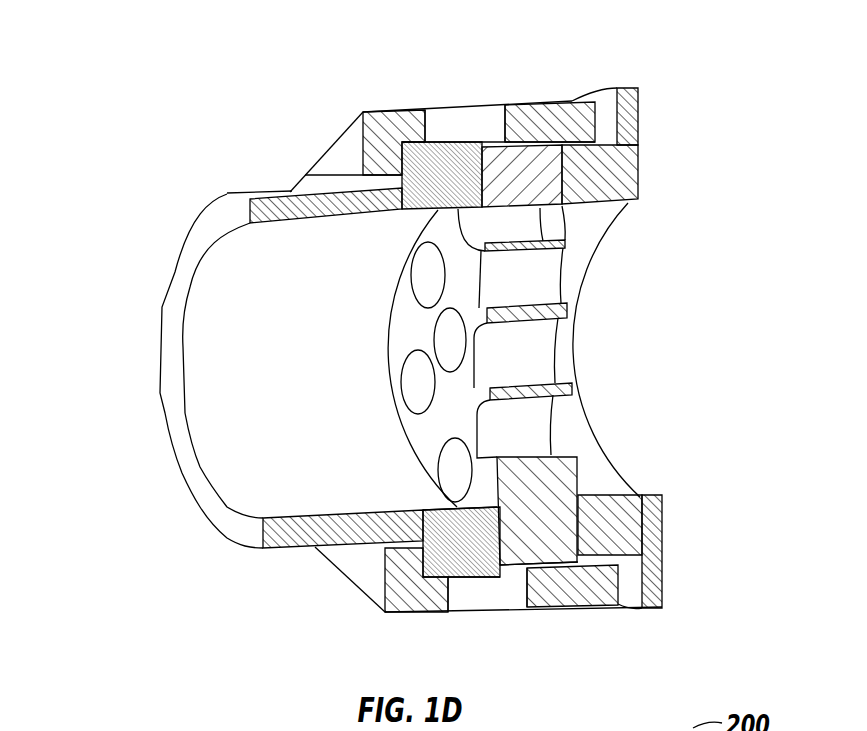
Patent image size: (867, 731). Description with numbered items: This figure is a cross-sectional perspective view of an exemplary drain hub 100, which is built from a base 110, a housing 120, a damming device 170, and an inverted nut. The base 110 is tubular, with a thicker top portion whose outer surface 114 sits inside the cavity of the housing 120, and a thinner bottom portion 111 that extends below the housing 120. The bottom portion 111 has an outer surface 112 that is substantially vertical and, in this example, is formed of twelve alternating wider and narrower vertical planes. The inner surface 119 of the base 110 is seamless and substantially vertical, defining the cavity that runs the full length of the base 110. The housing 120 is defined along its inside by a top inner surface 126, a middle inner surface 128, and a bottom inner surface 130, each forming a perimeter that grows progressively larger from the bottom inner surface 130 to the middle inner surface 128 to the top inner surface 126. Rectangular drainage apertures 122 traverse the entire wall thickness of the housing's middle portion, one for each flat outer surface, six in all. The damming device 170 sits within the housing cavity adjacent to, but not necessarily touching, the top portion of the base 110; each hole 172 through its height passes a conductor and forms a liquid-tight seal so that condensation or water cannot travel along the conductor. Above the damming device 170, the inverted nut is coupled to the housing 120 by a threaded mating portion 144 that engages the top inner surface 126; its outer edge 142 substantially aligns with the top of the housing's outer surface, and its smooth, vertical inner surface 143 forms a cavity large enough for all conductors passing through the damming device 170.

The drain hub 100 is at (674, 57).
The base 110 is at (150, 247).
The bottom portion 111 is at (168, 392).
The outer surface 112 is at (287, 550).
The outer surface 114 is at (481, 563).
The inner surface 119 is at (272, 372).
The housing 120 is at (493, 90).
The drainage apertures 122 is at (438, 117).
The top inner surface 126 is at (533, 128).
The middle inner surface 128 is at (438, 142).
The bottom inner surface 130 is at (383, 185).
The outer edge 142 is at (628, 112).
The inner surface 143 is at (570, 422).
The mating portion 144 is at (593, 177).
The damming device 170 is at (407, 315).
The hole 172 is at (545, 355).